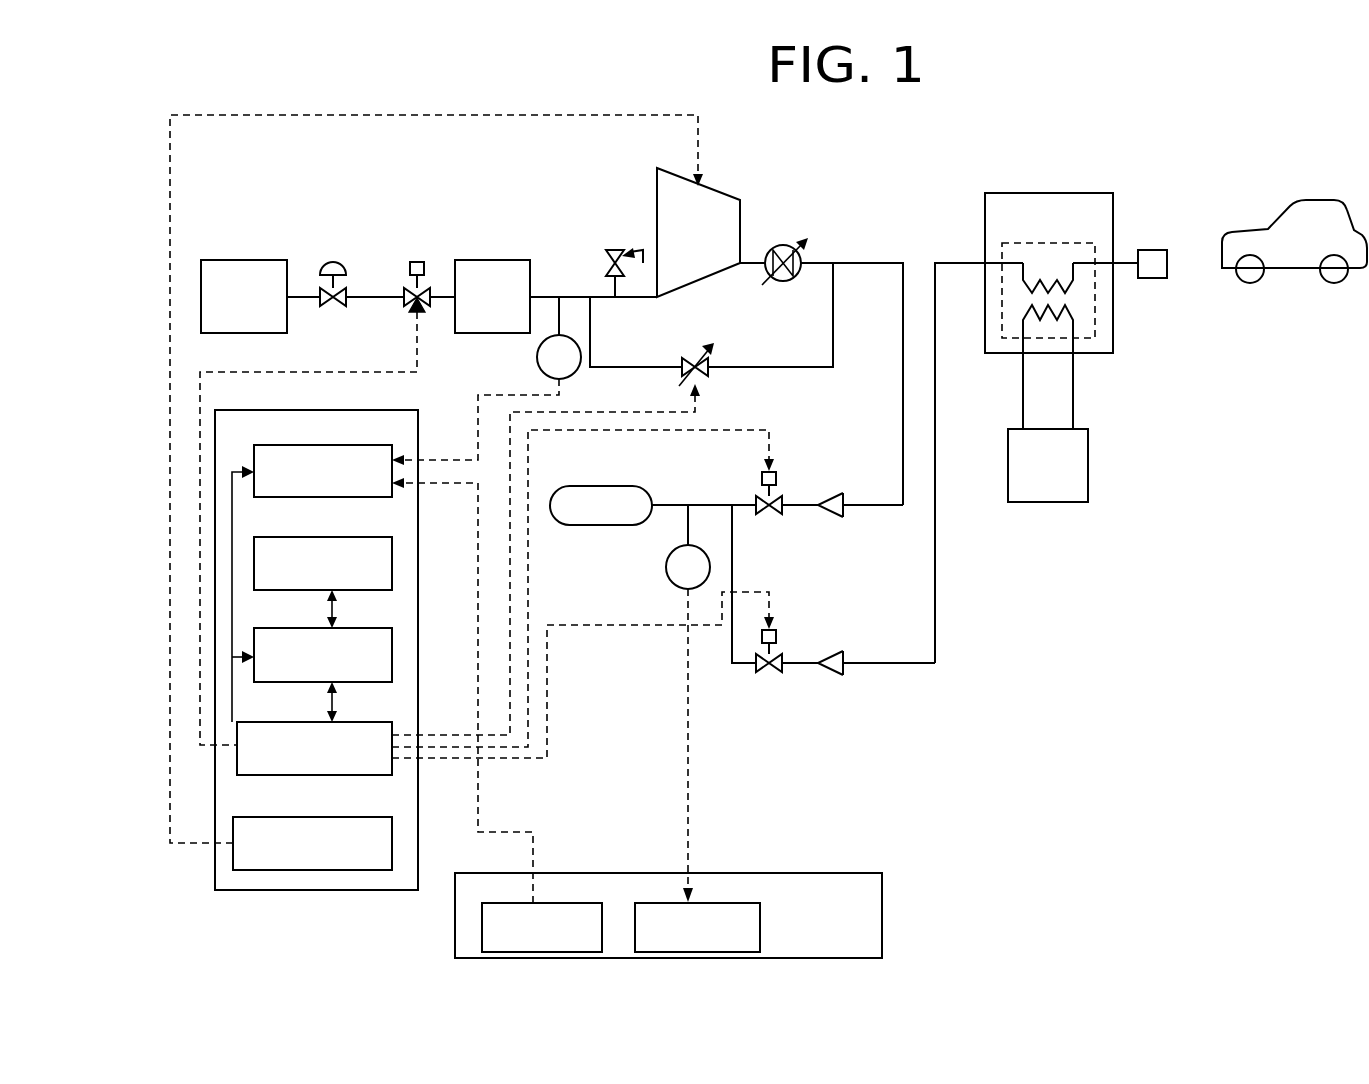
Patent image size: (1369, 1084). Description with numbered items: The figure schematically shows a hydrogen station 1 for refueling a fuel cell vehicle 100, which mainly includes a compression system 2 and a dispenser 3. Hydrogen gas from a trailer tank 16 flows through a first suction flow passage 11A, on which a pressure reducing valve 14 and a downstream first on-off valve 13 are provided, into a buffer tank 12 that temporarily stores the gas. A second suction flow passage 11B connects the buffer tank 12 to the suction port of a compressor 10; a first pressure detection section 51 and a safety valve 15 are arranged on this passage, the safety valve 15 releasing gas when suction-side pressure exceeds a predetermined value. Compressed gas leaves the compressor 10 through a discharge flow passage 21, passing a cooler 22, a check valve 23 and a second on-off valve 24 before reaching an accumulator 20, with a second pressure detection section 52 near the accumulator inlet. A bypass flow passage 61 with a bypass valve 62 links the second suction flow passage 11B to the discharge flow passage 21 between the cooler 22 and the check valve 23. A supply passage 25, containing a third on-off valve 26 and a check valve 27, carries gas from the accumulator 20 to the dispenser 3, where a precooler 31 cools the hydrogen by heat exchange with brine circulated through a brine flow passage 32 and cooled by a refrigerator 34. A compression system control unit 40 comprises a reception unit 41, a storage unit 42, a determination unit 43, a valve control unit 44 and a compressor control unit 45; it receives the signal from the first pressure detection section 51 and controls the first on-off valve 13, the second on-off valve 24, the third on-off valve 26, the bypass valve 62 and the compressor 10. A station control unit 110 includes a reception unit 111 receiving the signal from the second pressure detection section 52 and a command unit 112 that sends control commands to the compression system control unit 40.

The hydrogen station 1 is at (1178, 150).
The compression system 2 is at (895, 187).
The dispenser 3 is at (1113, 203).
The compressor 10 is at (718, 190).
The first suction flow passage 11A is at (445, 297).
The second suction flow passage 11B is at (568, 297).
The buffer tank 12 is at (490, 260).
The first on-off valve 13 is at (417, 262).
The pressure reducing valve 14 is at (333, 262).
The safety valve 15 is at (625, 249).
The trailer tank 16 is at (253, 260).
The accumulator 20 is at (610, 487).
The discharge flow passage 21 is at (858, 263).
The cooler 22 is at (792, 246).
The check valve 23 is at (832, 498).
The second on-off valve 24 is at (778, 482).
The supply passage 25 is at (937, 400).
The third on-off valve 26 is at (778, 640).
The check valve 27 is at (832, 658).
The precooler 31 is at (1097, 317).
The brine flow passage 32 is at (1075, 375).
The refrigerator 34 is at (1048, 503).
The compression system control unit 40 is at (365, 410).
The reception unit 41 is at (345, 445).
The storage unit 42 is at (345, 537).
The determination unit 43 is at (345, 628).
The valve control unit 44 is at (345, 722).
The compressor control unit 45 is at (345, 817).
The first pressure detection section 51 is at (537, 356).
The second pressure detection section 52 is at (666, 571).
The bypass flow passage 61 is at (591, 322).
The bypass valve 62 is at (714, 358).
The fuel cell vehicle 100 is at (1290, 272).
The station control unit 110 is at (808, 873).
The reception unit 111 is at (718, 902).
The command unit 112 is at (567, 902).